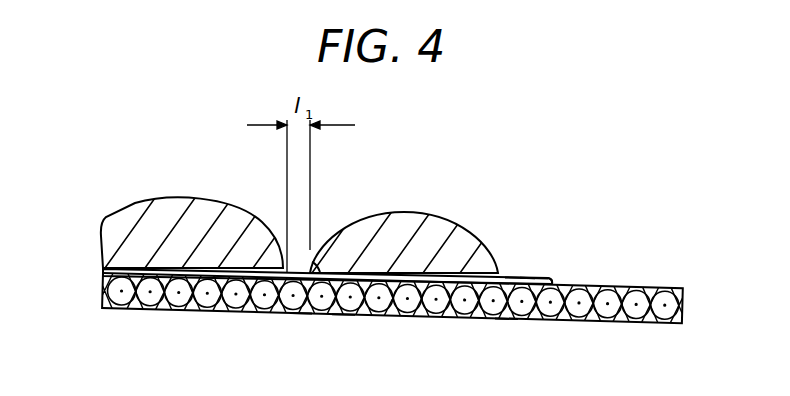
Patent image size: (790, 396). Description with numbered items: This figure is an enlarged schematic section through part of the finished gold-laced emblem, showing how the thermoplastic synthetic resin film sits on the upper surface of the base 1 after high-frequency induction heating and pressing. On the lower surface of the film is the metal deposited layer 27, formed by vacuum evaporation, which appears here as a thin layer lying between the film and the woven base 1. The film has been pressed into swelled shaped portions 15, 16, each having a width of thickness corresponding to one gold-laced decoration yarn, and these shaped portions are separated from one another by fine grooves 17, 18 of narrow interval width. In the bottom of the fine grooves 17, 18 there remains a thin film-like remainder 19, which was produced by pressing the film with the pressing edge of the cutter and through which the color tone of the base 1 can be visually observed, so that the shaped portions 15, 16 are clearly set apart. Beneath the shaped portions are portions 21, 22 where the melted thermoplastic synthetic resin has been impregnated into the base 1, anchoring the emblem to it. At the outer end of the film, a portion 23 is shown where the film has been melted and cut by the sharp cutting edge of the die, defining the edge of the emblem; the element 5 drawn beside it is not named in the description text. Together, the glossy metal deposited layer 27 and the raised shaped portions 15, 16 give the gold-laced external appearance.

The base 1 is at (620, 318).
The resin film layer 5 is at (540, 279).
The shaped portion 15 is at (400, 220).
The shaped portion 16 is at (175, 210).
The fine groove 17 is at (343, 315).
The fine groove 18 is at (522, 281).
The thin film-like remainder 19 is at (305, 262).
The impregnated portion 21 is at (300, 314).
The impregnated portion 22 is at (505, 319).
The melted and cut portion 23 is at (556, 284).
The metal deposited layer 27 is at (102, 270).